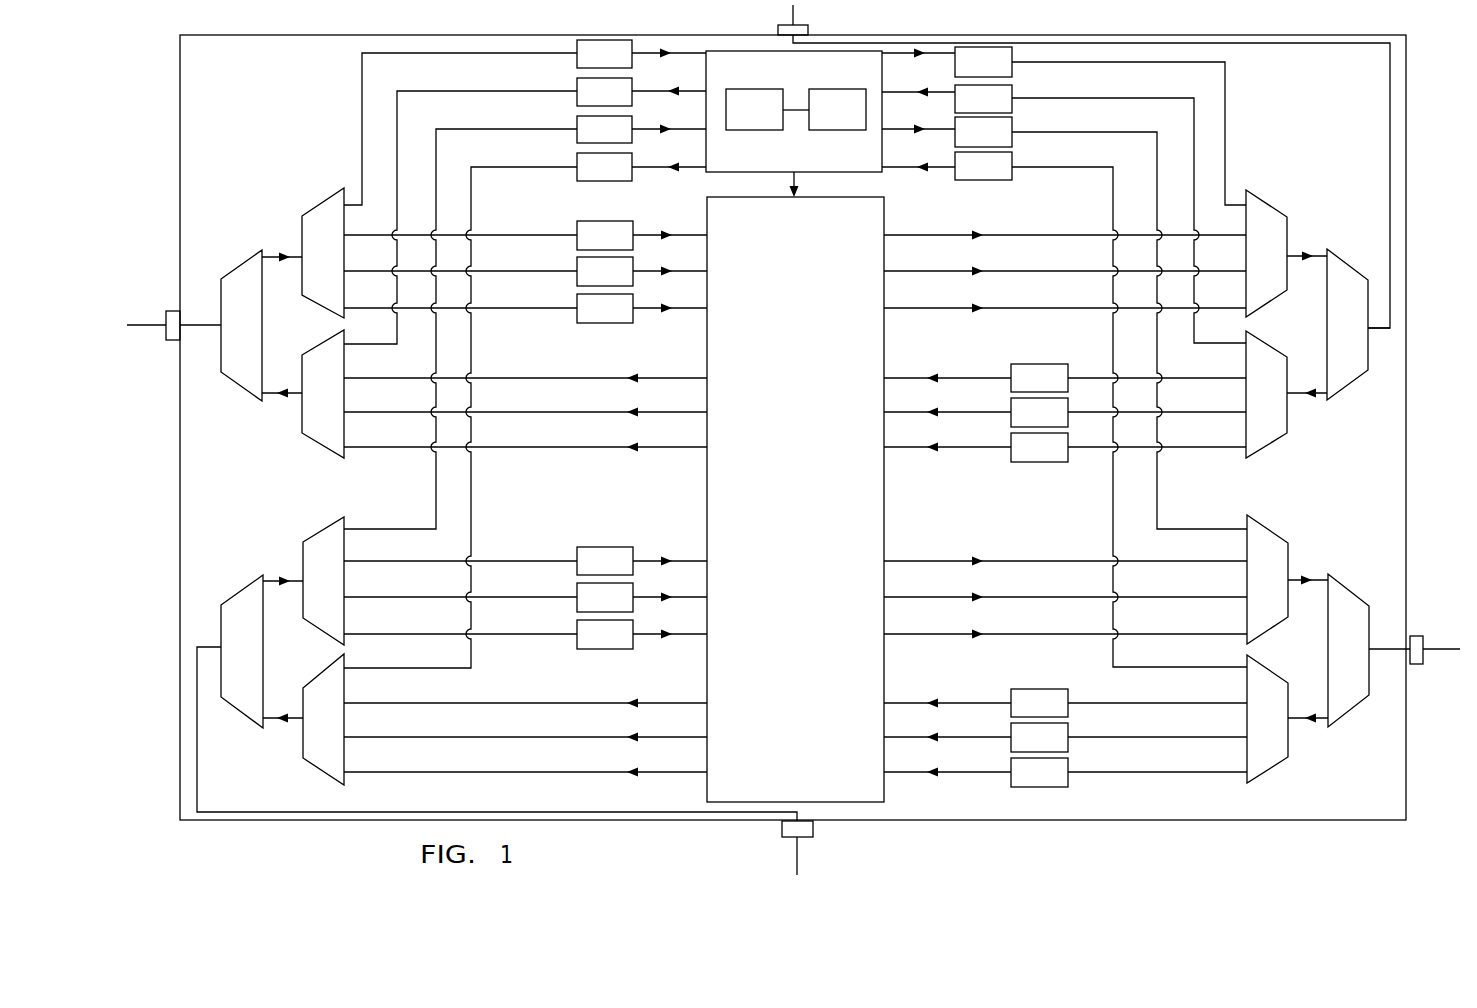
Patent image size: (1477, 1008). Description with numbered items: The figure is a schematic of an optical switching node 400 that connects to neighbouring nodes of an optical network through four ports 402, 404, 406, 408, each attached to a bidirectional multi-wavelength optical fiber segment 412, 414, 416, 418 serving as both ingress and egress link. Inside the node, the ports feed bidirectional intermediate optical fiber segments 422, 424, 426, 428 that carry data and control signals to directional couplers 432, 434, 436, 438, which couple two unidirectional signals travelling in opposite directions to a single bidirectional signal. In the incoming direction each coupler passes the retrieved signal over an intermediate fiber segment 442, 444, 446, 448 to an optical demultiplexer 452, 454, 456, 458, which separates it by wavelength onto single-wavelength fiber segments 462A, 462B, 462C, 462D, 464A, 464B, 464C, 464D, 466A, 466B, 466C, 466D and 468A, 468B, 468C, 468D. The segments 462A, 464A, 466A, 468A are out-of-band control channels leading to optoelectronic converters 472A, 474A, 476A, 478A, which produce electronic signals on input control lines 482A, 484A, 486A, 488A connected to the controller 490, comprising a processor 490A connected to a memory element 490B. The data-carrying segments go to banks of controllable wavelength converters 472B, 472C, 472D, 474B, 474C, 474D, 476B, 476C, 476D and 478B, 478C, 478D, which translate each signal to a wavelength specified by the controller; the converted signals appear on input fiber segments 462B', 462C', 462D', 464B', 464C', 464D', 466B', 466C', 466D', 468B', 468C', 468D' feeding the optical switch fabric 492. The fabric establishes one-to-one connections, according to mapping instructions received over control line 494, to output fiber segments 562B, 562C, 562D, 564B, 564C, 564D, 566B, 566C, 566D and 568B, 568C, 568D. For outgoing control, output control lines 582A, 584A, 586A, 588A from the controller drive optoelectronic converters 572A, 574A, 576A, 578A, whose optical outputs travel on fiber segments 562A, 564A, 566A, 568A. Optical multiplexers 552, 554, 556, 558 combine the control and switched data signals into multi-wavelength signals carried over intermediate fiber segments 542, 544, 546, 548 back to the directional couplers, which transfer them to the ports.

The optical switching node 400 is at (232, 62).
The port 402 is at (165, 318).
The port 404 is at (777, 30).
The port 406 is at (1420, 636).
The port 408 is at (813, 827).
The multi-wavelength optical fiber segment 412 is at (135, 330).
The multi-wavelength optical fiber segment 414 is at (800, 12).
The multi-wavelength optical fiber segment 416 is at (1448, 652).
The multi-wavelength optical fiber segment 418 is at (796, 865).
The intermediate optical fiber segment 422 is at (208, 328).
The intermediate optical fiber segment 424 is at (1388, 68).
The intermediate optical fiber segment 426 is at (1378, 652).
The intermediate optical fiber segment 428 is at (436, 812).
The directional coupler 432 is at (259, 337).
The directional coupler 434 is at (1365, 336).
The directional coupler 436 is at (1367, 662).
The directional coupler 438 is at (260, 662).
The intermediate optical fiber segment 442 is at (275, 262).
The intermediate optical fiber segment 444 is at (1318, 398).
The intermediate optical fiber segment 446 is at (1318, 724).
The intermediate optical fiber segment 448 is at (275, 586).
The optical demultiplexer 452 is at (340, 267).
The optical demultiplexer 454 is at (1284, 405).
The optical demultiplexer 456 is at (1285, 731).
The optical demultiplexer 458 is at (341, 592).
The single-wavelength optical fiber segment 462A is at (362, 107).
The single-wavelength optical fiber segment 462B is at (460, 225).
The single-wavelength optical fiber segment 462C is at (460, 261).
The single-wavelength optical fiber segment 462D is at (460, 297).
The single-wavelength input optical fiber segment 462B' is at (670, 220).
The single-wavelength input optical fiber segment 462C' is at (670, 256).
The single-wavelength input optical fiber segment 462D' is at (670, 293).
The single-wavelength optical fiber segment 464A is at (1150, 98).
The single-wavelength optical fiber segment 464B is at (1157, 361).
The single-wavelength optical fiber segment 464C is at (1157, 396).
The single-wavelength optical fiber segment 464D is at (1157, 431).
The single-wavelength input optical fiber segment 464B' is at (947, 364).
The single-wavelength input optical fiber segment 464C' is at (947, 399).
The single-wavelength input optical fiber segment 464D' is at (947, 434).
The single-wavelength optical fiber segment 466A is at (1085, 166).
The single-wavelength optical fiber segment 466B is at (1157, 687).
The single-wavelength optical fiber segment 466C is at (1157, 721).
The single-wavelength optical fiber segment 466D is at (1157, 756).
The single-wavelength input optical fiber segment 466B' is at (947, 689).
The single-wavelength input optical fiber segment 466C' is at (947, 724).
The single-wavelength input optical fiber segment 466D' is at (947, 759).
The single-wavelength optical fiber segment 468A is at (485, 130).
The single-wavelength optical fiber segment 468B is at (460, 548).
The single-wavelength optical fiber segment 468C is at (460, 585).
The single-wavelength optical fiber segment 468D is at (460, 622).
The single-wavelength input optical fiber segment 468B' is at (670, 545).
The single-wavelength input optical fiber segment 468C' is at (670, 582).
The single-wavelength input optical fiber segment 468D' is at (670, 619).
The optoelectronic converter 472A is at (627, 65).
The wavelength converter 472B is at (627, 246).
The wavelength converter 472C is at (627, 282).
The wavelength converter 472D is at (627, 319).
The optoelectronic converter 474A is at (1006, 110).
The wavelength converter 474B is at (1062, 389).
The wavelength converter 474C is at (1062, 423).
The wavelength converter 474D is at (1062, 458).
The optoelectronic converter 476A is at (1006, 177).
The wavelength converter 476B is at (1062, 714).
The wavelength converter 476C is at (1062, 748).
The wavelength converter 476D is at (1062, 783).
The optoelectronic converter 478A is at (627, 141).
The wavelength converter 478B is at (627, 572).
The wavelength converter 478C is at (627, 608).
The wavelength converter 478D is at (627, 645).
The input control line 482A is at (700, 55).
The input control line 484A is at (950, 57).
The input control line 486A is at (950, 133).
The input control line 488A is at (700, 131).
The controller 490 is at (876, 78).
The processor 490A is at (754, 109).
The memory element 490B is at (837, 109).
The optical switch fabric 492 is at (813, 537).
The control line 494 is at (800, 180).
The intermediate optical fiber segment 542 is at (275, 398).
The intermediate optical fiber segment 544 is at (1318, 262).
The intermediate optical fiber segment 546 is at (1318, 586).
The intermediate optical fiber segment 548 is at (275, 722).
The optical multiplexer 552 is at (340, 405).
The optical multiplexer 554 is at (1284, 265).
The optical multiplexer 556 is at (1285, 592).
The optical multiplexer 558 is at (341, 731).
The single-wavelength optical fiber segment 562A is at (439, 93).
The single-wavelength output optical fiber segment 562B is at (530, 378).
The single-wavelength output optical fiber segment 562C is at (530, 412).
The single-wavelength output optical fiber segment 562D is at (530, 447).
The single-wavelength optical fiber segment 564A is at (1226, 68).
The single-wavelength output optical fiber segment 564B is at (1083, 233).
The single-wavelength output optical fiber segment 564C is at (1083, 270).
The single-wavelength output optical fiber segment 564D is at (1083, 307).
The single-wavelength optical fiber segment 566A is at (1103, 131).
The single-wavelength output optical fiber segment 566B is at (1090, 560).
The single-wavelength output optical fiber segment 566C is at (1090, 596).
The single-wavelength output optical fiber segment 566D is at (1090, 633).
The single-wavelength optical fiber segment 568A is at (503, 167).
The single-wavelength output optical fiber segment 568B is at (530, 703).
The single-wavelength output optical fiber segment 568C is at (530, 737).
The single-wavelength output optical fiber segment 568D is at (530, 772).
The optoelectronic converter 572A is at (627, 103).
The optoelectronic converter 574A is at (1006, 73).
The optoelectronic converter 576A is at (1006, 143).
The optoelectronic converter 578A is at (627, 178).
The output control line 582A is at (700, 93).
The output control line 584A is at (950, 96).
The output control line 586A is at (950, 171).
The output control line 588A is at (700, 169).